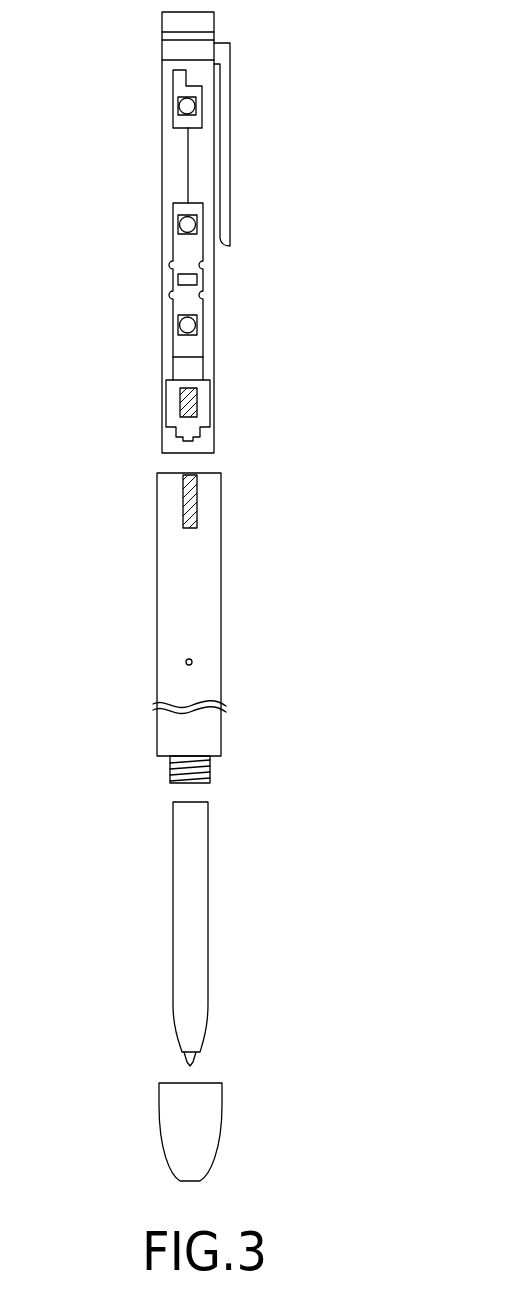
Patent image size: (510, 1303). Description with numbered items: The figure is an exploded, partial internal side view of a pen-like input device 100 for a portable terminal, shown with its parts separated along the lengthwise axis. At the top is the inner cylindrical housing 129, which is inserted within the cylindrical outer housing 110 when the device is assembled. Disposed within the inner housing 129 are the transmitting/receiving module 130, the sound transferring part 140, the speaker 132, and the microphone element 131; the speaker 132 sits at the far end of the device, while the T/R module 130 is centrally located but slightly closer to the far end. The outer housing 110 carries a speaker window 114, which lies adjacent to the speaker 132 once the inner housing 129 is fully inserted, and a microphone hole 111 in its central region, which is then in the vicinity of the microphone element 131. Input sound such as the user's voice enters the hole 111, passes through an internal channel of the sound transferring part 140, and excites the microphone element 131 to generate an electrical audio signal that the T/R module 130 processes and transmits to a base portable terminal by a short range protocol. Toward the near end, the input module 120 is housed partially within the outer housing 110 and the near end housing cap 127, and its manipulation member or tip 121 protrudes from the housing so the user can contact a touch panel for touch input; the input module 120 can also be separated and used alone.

The input device 100 is at (293, 134).
The outer housing 110 is at (172, 601).
The first microphone hole 111 is at (186, 662).
The speaker window 114 is at (183, 498).
The input module 120 is at (190, 935).
The manipulation member (tip) 121 is at (188, 1063).
The near end housing cap 127 is at (203, 1124).
The inner cylindrical housing 129 is at (210, 280).
The transmitting/receiving (T/R) module 130 is at (187, 307).
The microphone element 131 is at (180, 399).
The speaker 132 is at (180, 105).
The sound transferring part 140 is at (200, 402).